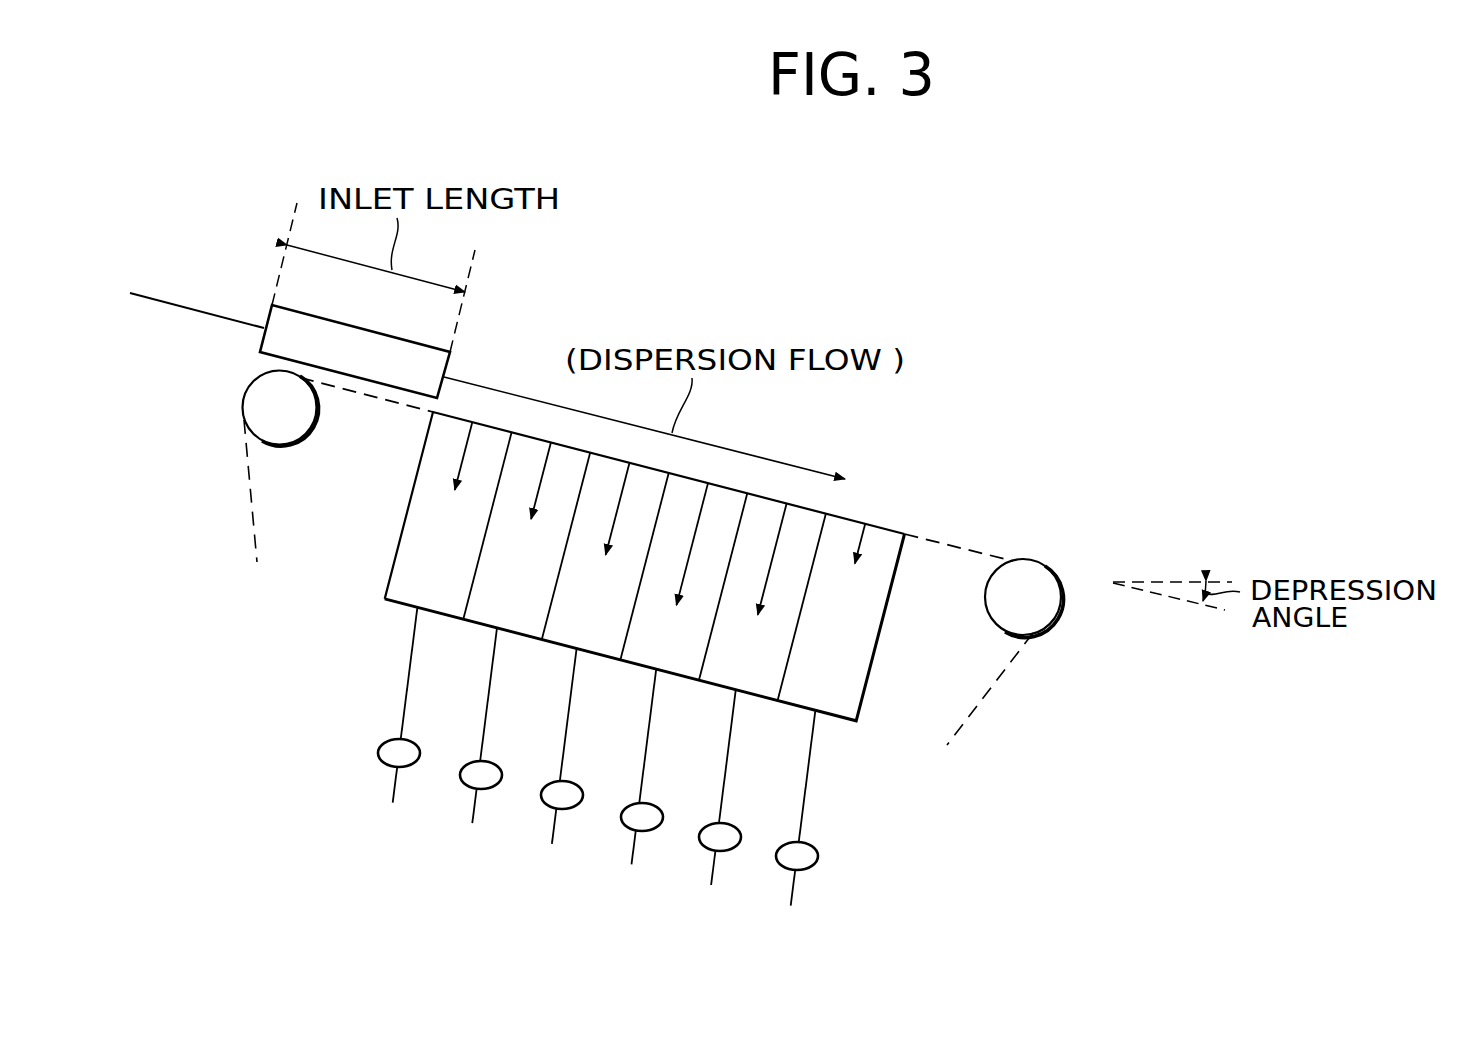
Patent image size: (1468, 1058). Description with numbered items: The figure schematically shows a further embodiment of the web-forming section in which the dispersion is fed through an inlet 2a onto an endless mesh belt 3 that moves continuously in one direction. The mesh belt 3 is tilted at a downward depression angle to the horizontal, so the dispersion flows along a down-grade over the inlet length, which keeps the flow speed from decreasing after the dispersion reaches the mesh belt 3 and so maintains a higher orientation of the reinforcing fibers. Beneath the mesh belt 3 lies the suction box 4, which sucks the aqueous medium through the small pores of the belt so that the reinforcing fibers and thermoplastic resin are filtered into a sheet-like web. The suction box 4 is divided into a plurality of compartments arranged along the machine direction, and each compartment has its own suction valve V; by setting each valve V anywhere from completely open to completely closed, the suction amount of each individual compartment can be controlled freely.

The inlet 2a is at (277, 318).
The mesh belt 3 is at (982, 550).
The suction box 4 is at (877, 650).
The suction valve V is at (812, 870).